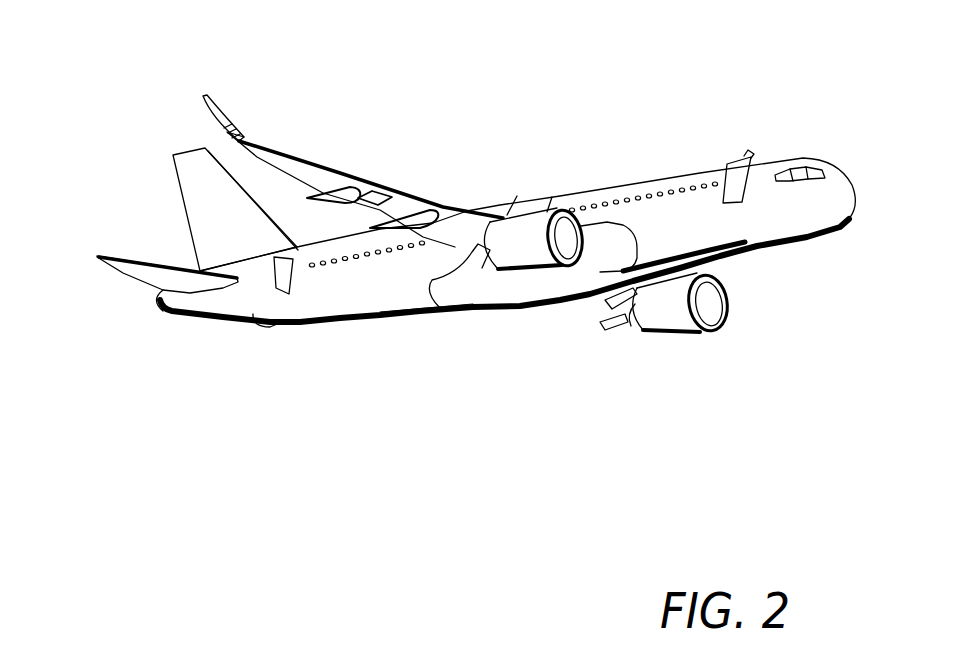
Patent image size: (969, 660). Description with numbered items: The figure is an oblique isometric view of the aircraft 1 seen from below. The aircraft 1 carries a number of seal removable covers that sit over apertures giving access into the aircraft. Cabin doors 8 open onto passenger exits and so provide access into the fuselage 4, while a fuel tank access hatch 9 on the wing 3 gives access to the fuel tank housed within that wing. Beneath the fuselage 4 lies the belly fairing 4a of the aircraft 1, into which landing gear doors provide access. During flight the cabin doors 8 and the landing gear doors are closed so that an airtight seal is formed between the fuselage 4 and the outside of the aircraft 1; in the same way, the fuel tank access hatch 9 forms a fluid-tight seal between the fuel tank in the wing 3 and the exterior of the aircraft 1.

The aircraft 1 is at (590, 131).
The wing 3 is at (297, 174).
The fuselage 4 is at (760, 174).
The belly fairing 4a is at (389, 299).
The cabin door 8 is at (282, 281).
The fuel tank access hatch 9 is at (372, 194).